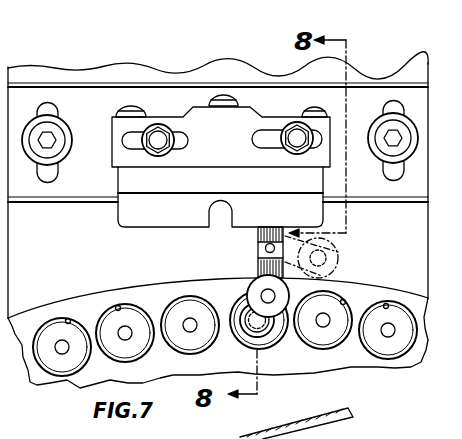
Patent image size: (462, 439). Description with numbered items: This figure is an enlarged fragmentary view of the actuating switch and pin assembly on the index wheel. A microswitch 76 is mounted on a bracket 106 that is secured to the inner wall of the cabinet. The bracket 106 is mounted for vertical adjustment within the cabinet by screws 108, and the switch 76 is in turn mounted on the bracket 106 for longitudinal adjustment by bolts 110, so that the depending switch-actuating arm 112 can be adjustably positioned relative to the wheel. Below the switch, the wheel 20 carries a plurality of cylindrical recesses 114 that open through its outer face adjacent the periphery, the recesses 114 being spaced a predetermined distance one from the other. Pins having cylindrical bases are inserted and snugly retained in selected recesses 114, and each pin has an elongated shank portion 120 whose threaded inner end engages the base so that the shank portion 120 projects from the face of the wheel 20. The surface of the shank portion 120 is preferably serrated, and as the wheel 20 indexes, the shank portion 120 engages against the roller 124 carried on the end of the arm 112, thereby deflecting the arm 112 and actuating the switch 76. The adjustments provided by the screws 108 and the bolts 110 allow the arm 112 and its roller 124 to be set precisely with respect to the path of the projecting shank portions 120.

The wheel 20 is at (60, 301).
The microswitch 76 is at (201, 103).
The bracket 106 is at (85, 98).
The screws 108 is at (72, 133).
The bolts 110 is at (280, 152).
The switch-actuating arm 112 is at (258, 262).
The cylindrical recesses 114 is at (69, 319).
The shank portion 120 is at (275, 336).
The roller 124 is at (256, 279).